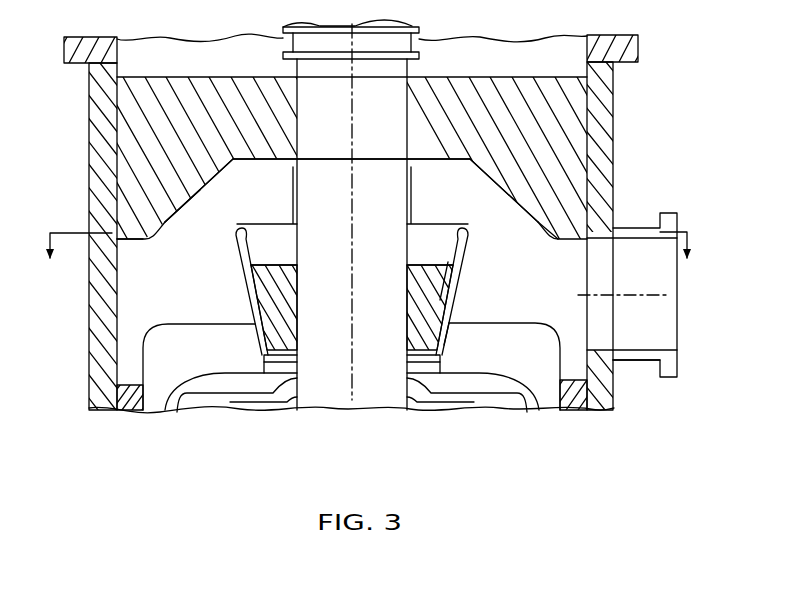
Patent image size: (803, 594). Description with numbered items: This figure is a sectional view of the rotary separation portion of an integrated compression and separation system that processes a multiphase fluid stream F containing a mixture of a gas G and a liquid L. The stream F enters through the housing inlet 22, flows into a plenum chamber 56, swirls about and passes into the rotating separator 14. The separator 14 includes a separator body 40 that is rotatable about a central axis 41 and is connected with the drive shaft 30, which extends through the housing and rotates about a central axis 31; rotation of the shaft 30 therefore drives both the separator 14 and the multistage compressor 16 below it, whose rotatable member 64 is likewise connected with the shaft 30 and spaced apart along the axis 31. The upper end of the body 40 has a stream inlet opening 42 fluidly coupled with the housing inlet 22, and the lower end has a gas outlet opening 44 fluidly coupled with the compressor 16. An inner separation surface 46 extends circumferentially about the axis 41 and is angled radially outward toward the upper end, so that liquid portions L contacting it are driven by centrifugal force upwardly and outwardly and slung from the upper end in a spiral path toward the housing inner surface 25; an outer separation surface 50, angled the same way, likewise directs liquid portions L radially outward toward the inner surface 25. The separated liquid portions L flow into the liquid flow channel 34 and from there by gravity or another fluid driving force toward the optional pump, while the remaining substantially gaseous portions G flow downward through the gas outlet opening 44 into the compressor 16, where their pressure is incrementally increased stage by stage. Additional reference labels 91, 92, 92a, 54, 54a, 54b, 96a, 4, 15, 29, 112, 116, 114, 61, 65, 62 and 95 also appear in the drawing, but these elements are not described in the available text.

The housing flange 91 is at (118, 71).
The housing body 92 is at (127, 147).
The housing body inner portion 92a is at (402, 112).
The drive shaft 30 is at (397, 90).
The upper surface of body 54a is at (430, 160).
The conical surface 54 is at (238, 164).
The conical surface right 54b is at (578, 240).
The inlet 22 is at (630, 222).
The port axis 96a is at (645, 295).
The section line 4- 4 is at (370, 245).
The shaft 15 is at (385, 238).
The shaft 29 is at (385, 238).
The central axis 31 is at (385, 238).
The central axis 41 is at (353, 398).
The piston inner wall 112 is at (410, 204).
The stream inlet opening 42 is at (433, 228).
The outer separation surface 50 is at (452, 265).
The inner separation surface 46 is at (258, 249).
The right sleeve lip 116 is at (465, 233).
The sleeve wall 114 is at (447, 300).
The sleeve lower portion 61 is at (448, 324).
The gas G is at (277, 344).
The seal retainer 65 is at (280, 362).
The gas outlet opening 44 is at (426, 355).
The separator body 40 is at (232, 290).
The rotating separator 14 is at (178, 279).
The liquid flow channel 34 is at (126, 363).
The lower housing right 62 is at (524, 330).
The rotatable member 64 is at (224, 408).
The multistage compressor 16 is at (555, 410).
The multiphase fluid stream F is at (258, 228).
The liquid L is at (506, 215).
The chamber region 95 is at (513, 219).
The plenum chamber 56 is at (184, 226).
The housing inner surface 25 is at (124, 343).